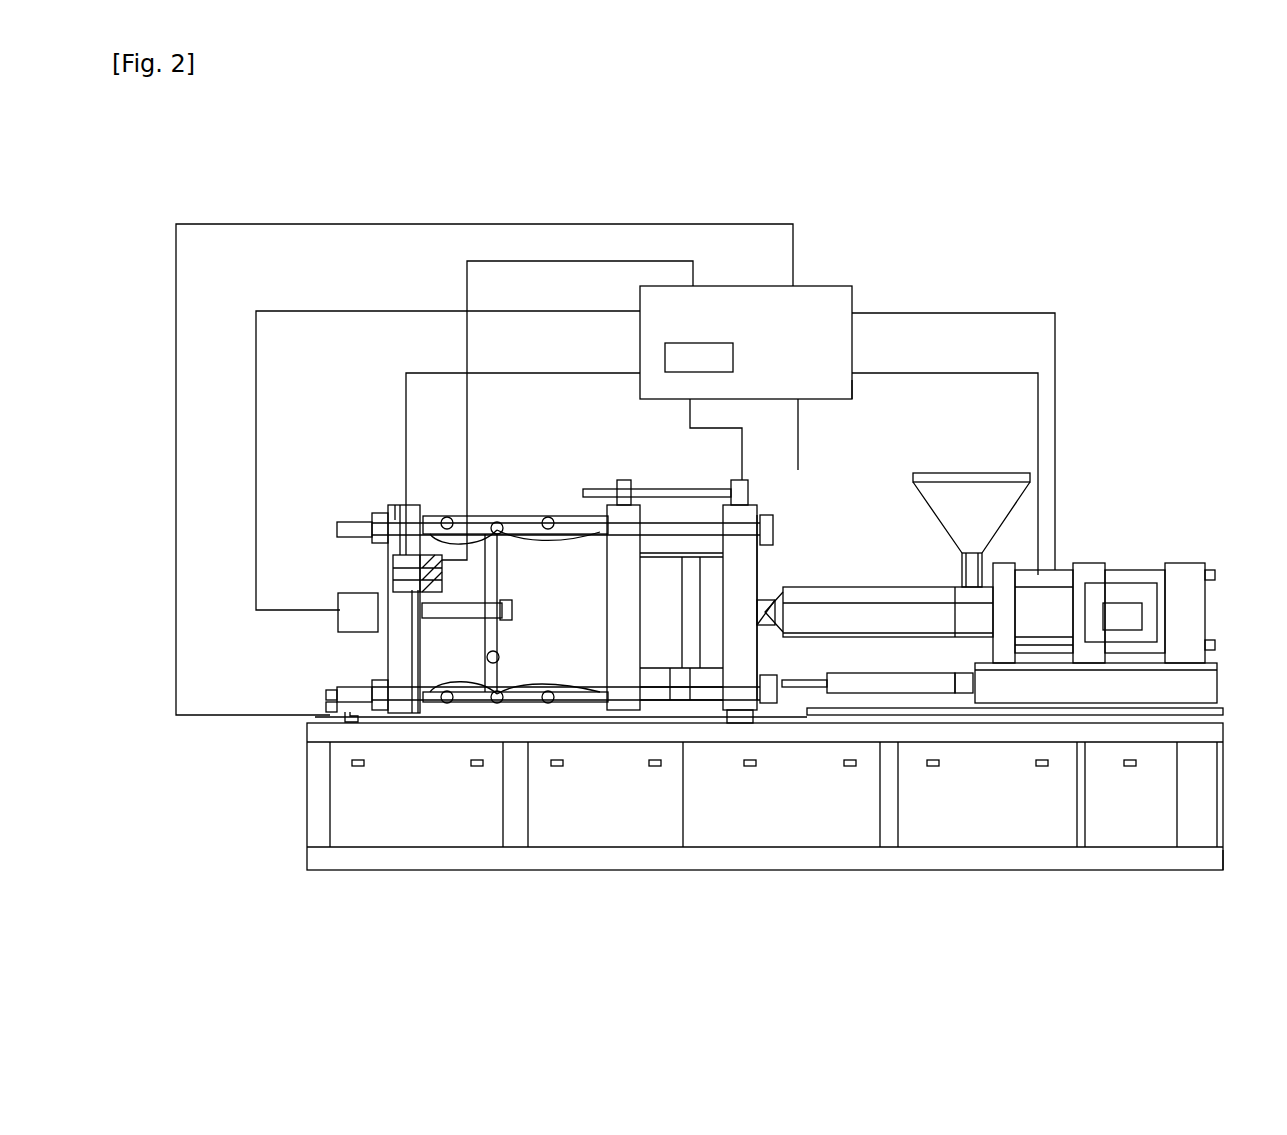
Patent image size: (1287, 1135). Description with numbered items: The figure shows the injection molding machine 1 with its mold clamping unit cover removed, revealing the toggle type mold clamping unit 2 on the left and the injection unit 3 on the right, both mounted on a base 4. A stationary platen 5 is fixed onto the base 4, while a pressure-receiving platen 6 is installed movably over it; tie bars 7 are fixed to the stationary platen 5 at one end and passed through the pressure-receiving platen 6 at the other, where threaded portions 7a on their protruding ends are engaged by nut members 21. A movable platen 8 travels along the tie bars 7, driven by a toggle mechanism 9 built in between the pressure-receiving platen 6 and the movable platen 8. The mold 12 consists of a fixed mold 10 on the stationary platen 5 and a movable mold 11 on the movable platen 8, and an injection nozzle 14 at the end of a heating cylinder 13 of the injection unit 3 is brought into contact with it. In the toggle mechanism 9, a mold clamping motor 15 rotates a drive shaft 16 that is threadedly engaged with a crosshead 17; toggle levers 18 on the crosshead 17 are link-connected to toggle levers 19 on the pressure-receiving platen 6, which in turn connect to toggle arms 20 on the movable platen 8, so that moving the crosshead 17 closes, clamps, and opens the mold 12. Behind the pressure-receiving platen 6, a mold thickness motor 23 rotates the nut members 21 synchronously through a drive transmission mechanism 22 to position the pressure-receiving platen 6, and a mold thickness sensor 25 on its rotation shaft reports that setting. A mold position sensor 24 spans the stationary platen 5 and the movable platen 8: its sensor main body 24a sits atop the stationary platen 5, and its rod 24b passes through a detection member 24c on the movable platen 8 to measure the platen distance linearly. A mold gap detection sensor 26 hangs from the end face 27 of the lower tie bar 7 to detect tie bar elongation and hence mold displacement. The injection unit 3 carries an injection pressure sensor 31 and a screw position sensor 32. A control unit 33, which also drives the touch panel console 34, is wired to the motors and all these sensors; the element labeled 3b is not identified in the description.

The injection molding machine 1 is at (1215, 896).
The toggle type mold clamping unit 2 is at (530, 663).
The injection unit 3 is at (1011, 630).
The controller storage unit 3b is at (705, 343).
The base 4 is at (310, 725).
The stationary platen 5 is at (747, 720).
The pressure-receiving platen 6 is at (400, 713).
The tie bars 7 is at (658, 700).
The threaded portions 7a is at (360, 522).
The movable platen 8 is at (623, 705).
The toggle mechanism 9 is at (458, 705).
The fixed mold 10 is at (700, 700).
The movable mold 11 is at (677, 700).
The mold 12 is at (652, 525).
The heating cylinder 13 is at (886, 587).
The injection nozzle 14 is at (775, 625).
The mold clamping motor 15 is at (355, 593).
The drive shaft 16 is at (490, 625).
The crosshead 17 is at (512, 605).
The toggle levers 18 is at (500, 560).
The toggle levers 19 is at (465, 516).
The toggle arms 20 is at (520, 518).
The nut members 21 is at (382, 505).
The drive transmission mechanism 22 is at (400, 650).
The mold thickness motor 23 is at (398, 505).
The mold position sensor 24 is at (757, 505).
The sensor main body 24a is at (745, 480).
The rod 24b is at (700, 489).
The detection member 24c is at (625, 480).
The mold thickness sensor 25 is at (415, 510).
The mold gap detection sensor 26 is at (343, 718).
The end face 27 is at (330, 695).
The injection pressure sensor 31 is at (1030, 703).
The screw position sensor 32 is at (1060, 575).
The control unit 33 is at (852, 385).
The touch panel console 34 is at (775, 560).